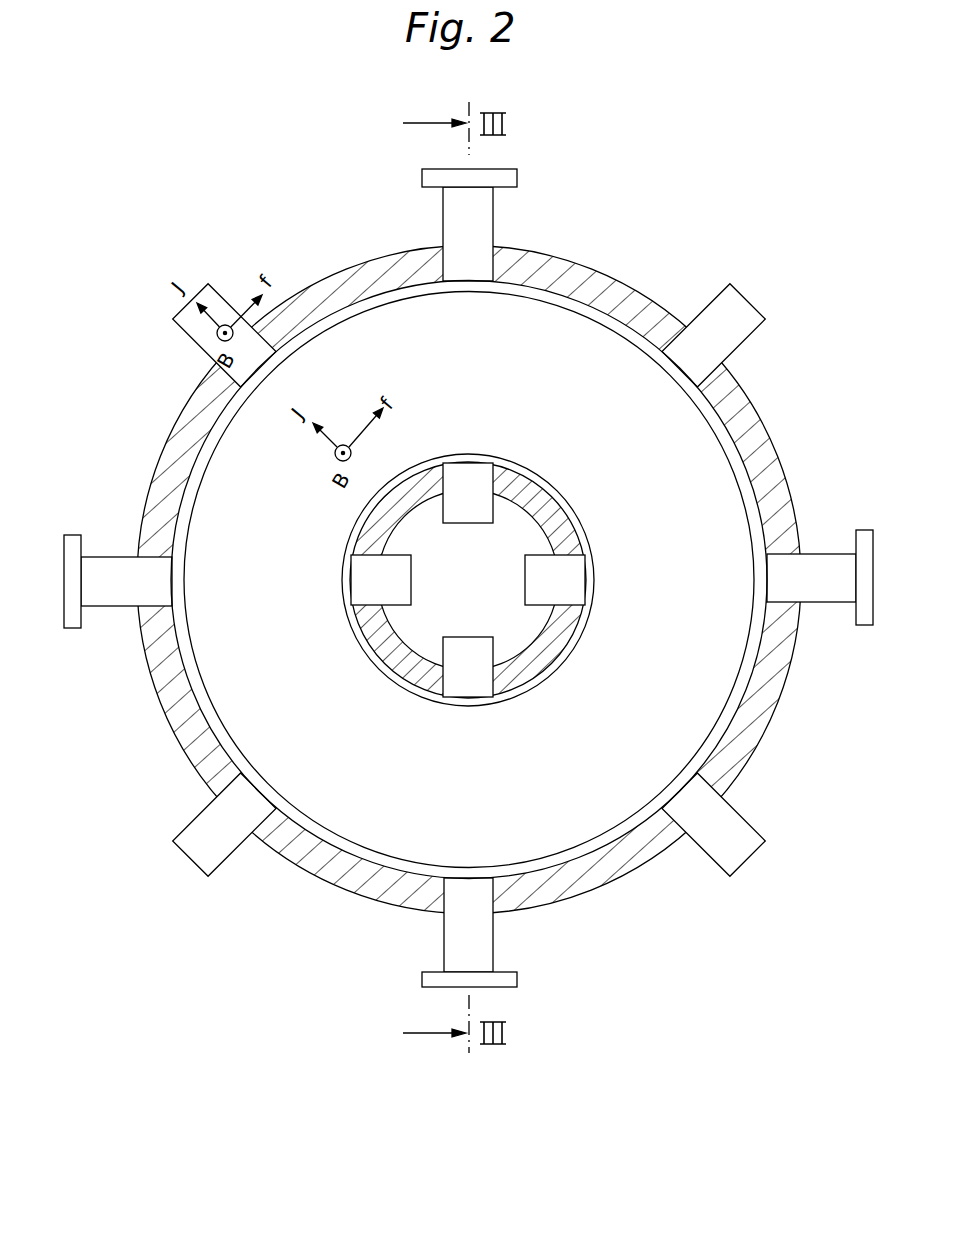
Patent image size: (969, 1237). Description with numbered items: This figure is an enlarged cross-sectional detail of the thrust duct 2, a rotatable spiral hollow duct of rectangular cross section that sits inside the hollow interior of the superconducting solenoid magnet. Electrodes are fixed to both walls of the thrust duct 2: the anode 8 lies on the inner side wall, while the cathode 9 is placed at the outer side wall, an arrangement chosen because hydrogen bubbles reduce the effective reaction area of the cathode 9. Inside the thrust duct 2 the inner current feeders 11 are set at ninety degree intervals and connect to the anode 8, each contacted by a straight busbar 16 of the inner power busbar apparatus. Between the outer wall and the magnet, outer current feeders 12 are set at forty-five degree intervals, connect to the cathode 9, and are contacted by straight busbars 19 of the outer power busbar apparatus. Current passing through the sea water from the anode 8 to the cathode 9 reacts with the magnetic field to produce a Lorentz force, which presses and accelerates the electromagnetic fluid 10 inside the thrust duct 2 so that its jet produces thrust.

The thrust duct 2 is at (607, 283).
The anode 8 is at (573, 510).
The cathode 9 is at (188, 500).
The electromagnetic fluid 10 is at (459, 355).
The inner current feeders 11 is at (572, 578).
The outer current feeders 12 is at (484, 213).
The straight busbar 16 is at (397, 583).
The straight busbar 19 is at (862, 626).